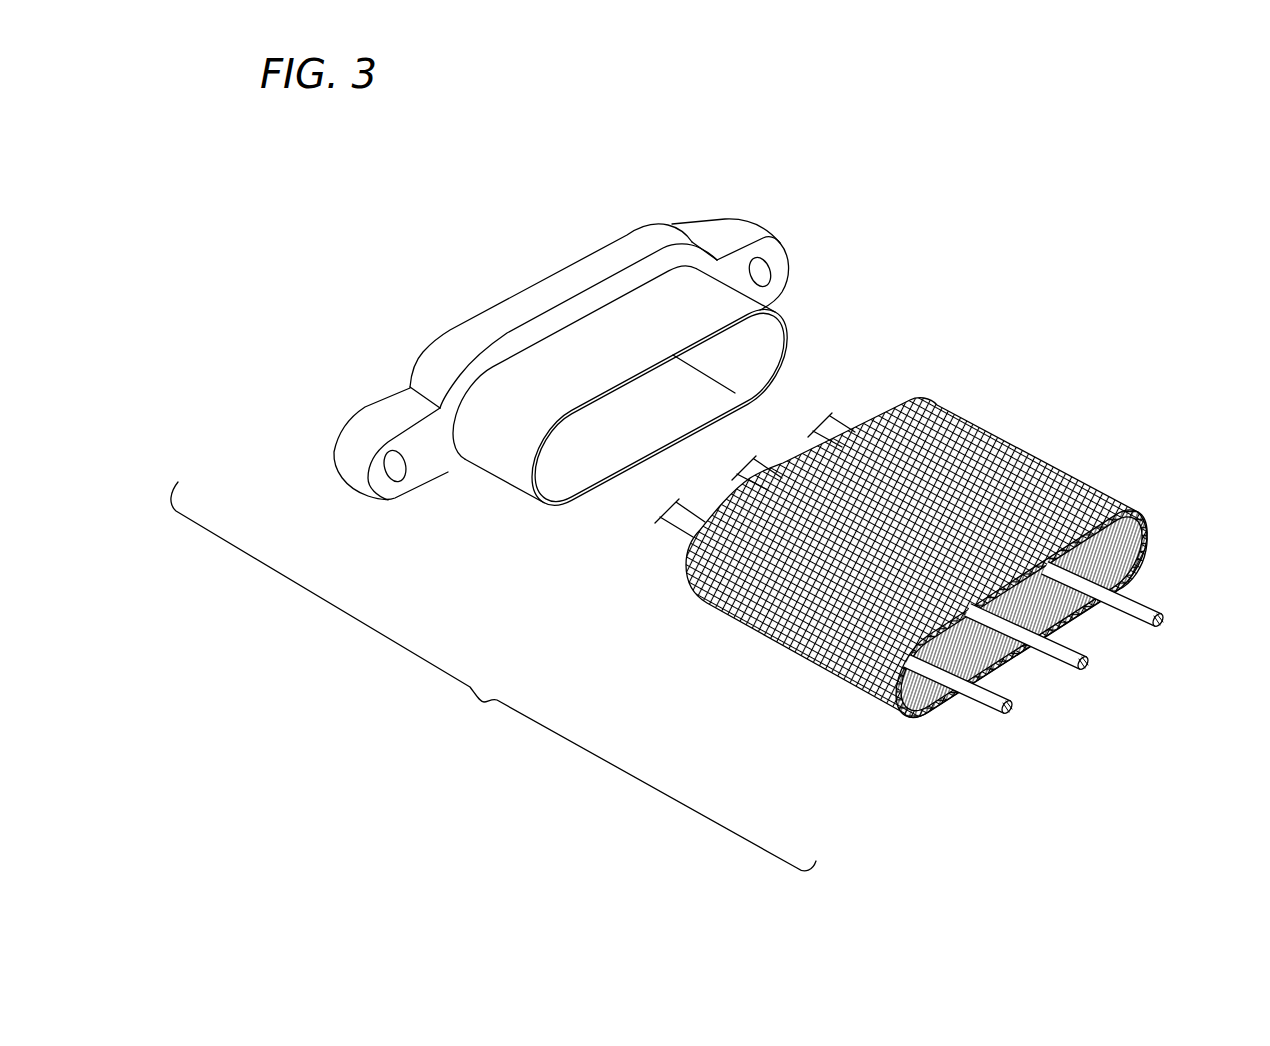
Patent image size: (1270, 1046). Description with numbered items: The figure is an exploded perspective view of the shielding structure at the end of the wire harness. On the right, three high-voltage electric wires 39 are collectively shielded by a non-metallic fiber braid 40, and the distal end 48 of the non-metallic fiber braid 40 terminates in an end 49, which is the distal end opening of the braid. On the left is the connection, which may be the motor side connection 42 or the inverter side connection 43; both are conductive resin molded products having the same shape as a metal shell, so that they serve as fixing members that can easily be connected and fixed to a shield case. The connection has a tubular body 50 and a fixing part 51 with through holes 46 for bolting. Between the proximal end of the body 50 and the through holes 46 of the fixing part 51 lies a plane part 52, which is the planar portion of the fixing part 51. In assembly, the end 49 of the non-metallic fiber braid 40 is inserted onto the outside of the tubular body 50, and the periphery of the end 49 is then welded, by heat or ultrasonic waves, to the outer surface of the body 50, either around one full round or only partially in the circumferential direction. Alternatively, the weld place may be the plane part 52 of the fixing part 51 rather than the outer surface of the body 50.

The high-voltage electric wire 39 is at (1163, 628).
The non-metallic fiber braid 40 is at (941, 549).
The motor side connection 42 is at (563, 259).
The inverter side connection 43 is at (645, 252).
The through hole 46 is at (395, 470).
The distal end 48 is at (733, 613).
The end 49 is at (913, 397).
The body 50 is at (562, 357).
The fixing part 51 is at (352, 437).
The plane part 52 is at (676, 260).